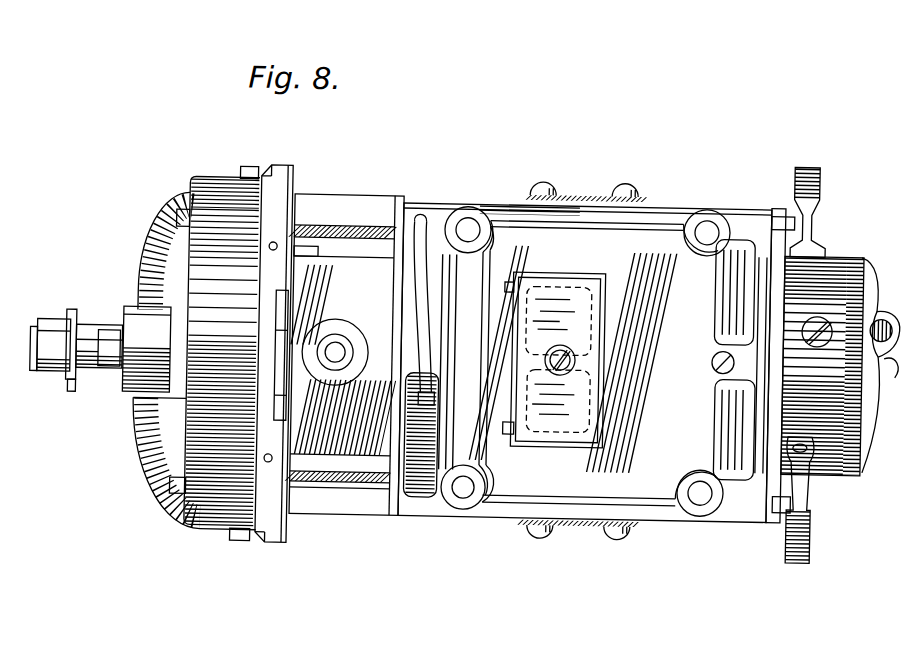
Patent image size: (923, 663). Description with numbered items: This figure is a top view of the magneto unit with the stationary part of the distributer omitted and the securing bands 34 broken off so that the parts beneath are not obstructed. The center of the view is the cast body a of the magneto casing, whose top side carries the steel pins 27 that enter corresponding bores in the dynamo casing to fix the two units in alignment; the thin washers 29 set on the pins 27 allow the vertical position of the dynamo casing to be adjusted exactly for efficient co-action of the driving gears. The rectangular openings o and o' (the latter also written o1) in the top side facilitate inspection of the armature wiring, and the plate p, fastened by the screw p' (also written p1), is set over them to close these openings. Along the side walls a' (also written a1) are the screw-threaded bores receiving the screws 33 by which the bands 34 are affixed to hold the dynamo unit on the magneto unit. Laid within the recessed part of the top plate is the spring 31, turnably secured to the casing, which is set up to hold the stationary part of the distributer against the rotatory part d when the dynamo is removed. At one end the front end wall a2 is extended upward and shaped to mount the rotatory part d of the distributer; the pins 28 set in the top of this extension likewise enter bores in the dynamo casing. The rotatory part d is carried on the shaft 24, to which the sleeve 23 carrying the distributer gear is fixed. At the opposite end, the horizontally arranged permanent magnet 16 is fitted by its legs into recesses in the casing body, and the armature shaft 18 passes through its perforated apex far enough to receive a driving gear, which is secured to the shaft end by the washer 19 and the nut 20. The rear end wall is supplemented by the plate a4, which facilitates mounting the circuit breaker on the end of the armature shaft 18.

The permanent magnet 16 is at (197, 352).
The armature shaft 18 is at (80, 349).
The washer 19 is at (74, 398).
The nut 20 is at (50, 344).
The sleeve 23 is at (146, 349).
The shaft 24 is at (100, 340).
The pins 27 is at (466, 230).
The pins 28 is at (271, 359).
The thin washers 29 is at (489, 236).
The spring 31 is at (421, 286).
The screws 33 is at (550, 188).
The bands 34 is at (589, 195).
The body of the casing a is at (833, 366).
The side walls a' is at (584, 365).
The cover plate a1 is at (584, 365).
The front end wall a2 is at (274, 354).
The plate a4 is at (776, 346).
The rotatory part of the distributer d is at (287, 355).
The rectangular opening o is at (553, 373).
The rectangular opening o' is at (559, 304).
The upper window o1 is at (559, 304).
The plate p is at (559, 363).
The screw p' is at (571, 360).
The screw p1 is at (571, 360).